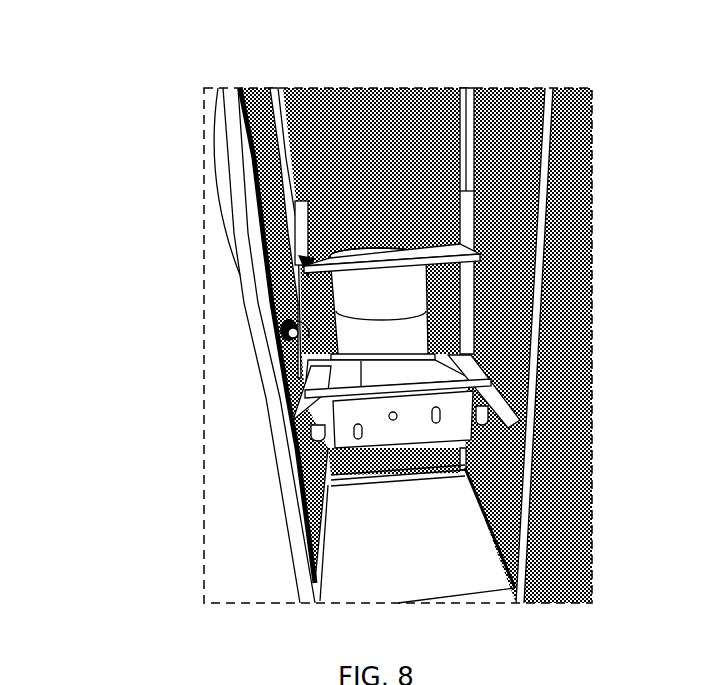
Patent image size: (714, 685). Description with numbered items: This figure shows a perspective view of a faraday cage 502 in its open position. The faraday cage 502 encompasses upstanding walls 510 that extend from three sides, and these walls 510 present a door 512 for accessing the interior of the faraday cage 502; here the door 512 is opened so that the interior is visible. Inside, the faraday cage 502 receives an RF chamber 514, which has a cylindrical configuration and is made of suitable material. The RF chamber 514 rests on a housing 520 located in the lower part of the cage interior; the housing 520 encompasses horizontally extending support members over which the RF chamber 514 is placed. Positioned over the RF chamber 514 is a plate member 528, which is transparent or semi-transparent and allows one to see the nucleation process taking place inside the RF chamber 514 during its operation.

The faraday cage 502 is at (126, 54).
The upstanding walls 510 is at (503, 145).
The door 512 is at (562, 240).
The RF chamber 514 is at (270, 322).
The housing 520 is at (300, 412).
The plate member 528 is at (300, 257).